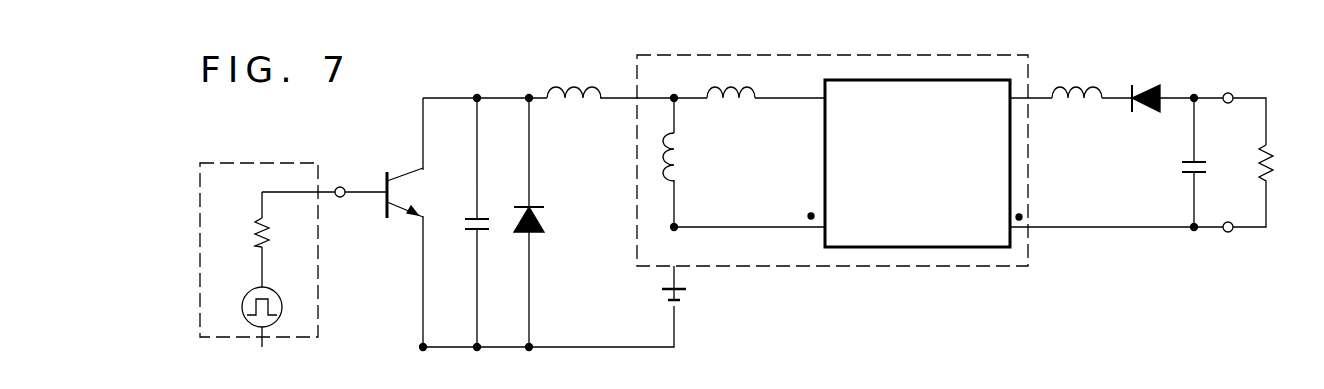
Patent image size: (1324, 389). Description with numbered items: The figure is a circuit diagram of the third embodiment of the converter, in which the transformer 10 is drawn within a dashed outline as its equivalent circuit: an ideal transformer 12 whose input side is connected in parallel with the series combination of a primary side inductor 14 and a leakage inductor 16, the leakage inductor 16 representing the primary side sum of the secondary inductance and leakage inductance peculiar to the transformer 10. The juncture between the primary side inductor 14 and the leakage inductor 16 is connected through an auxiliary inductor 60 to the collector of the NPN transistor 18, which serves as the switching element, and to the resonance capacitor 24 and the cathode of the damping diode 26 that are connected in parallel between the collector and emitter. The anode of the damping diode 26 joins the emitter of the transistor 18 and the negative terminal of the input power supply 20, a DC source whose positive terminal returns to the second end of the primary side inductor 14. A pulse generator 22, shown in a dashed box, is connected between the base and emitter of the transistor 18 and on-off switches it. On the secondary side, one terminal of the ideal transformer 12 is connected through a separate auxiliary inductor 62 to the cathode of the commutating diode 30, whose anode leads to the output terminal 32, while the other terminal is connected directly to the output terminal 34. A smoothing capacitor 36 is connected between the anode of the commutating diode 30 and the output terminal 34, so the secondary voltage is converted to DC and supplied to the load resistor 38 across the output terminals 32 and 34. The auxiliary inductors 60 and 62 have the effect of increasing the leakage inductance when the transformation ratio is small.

The transformer 10 is at (880, 267).
The ideal transformer 12 is at (823, 197).
The primary side inductor 14 is at (683, 170).
The leakage inductor 16 is at (742, 104).
The NPN transistor 18 is at (404, 171).
The input power supply 20 is at (684, 297).
The pulse generator 22 is at (318, 304).
The resonance capacitor 24 is at (465, 217).
The damping diode 26 is at (547, 219).
The commutating diode 30 is at (1144, 91).
The output terminal 32 is at (1229, 92).
The output terminal 34 is at (1228, 233).
The smoothing capacitor 36 is at (1180, 166).
The load resistor 38 is at (1264, 166).
The auxiliary inductor 60 is at (574, 90).
The auxiliary inductor 62 is at (1078, 91).